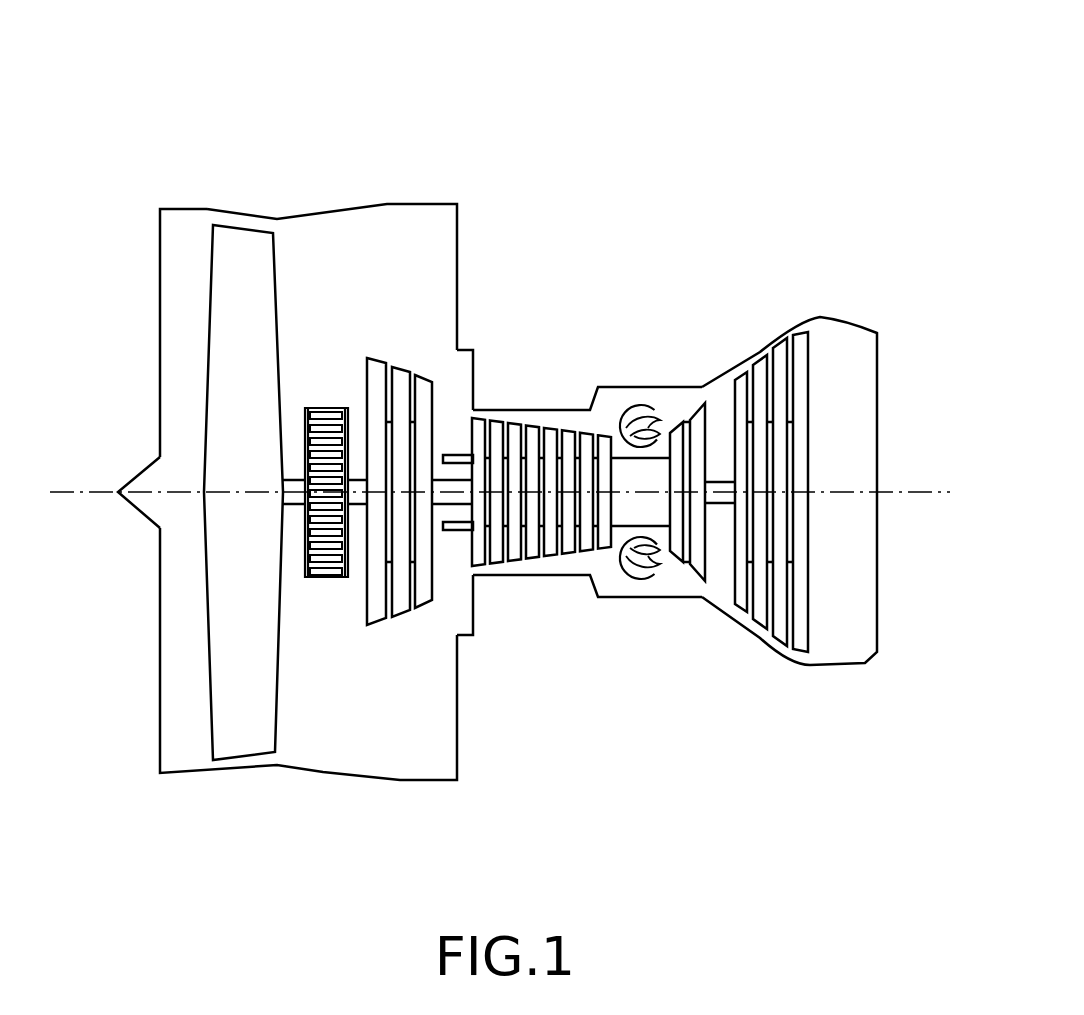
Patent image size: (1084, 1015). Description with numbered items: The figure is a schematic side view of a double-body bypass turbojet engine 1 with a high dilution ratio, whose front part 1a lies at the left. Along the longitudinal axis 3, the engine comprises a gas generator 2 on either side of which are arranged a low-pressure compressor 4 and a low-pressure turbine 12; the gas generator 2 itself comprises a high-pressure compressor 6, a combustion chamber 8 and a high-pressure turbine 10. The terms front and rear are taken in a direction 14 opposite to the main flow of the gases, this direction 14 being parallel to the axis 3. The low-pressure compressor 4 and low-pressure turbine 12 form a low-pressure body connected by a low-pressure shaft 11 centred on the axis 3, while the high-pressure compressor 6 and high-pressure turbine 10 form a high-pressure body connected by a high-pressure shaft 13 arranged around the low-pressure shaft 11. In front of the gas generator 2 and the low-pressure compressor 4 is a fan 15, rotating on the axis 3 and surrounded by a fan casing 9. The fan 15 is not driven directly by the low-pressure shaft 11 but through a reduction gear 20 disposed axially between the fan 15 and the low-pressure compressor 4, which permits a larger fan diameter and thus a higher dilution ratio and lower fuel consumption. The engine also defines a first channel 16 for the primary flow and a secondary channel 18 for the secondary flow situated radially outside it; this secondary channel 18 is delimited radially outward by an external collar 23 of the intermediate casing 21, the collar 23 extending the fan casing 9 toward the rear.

The turbojet engine 1 is at (354, 154).
The front part 1a is at (140, 273).
The gas generator 2 is at (535, 596).
The longitudinal axis 3 is at (918, 492).
The low-pressure compressor 4 is at (397, 642).
The high-pressure compressor 6 is at (545, 398).
The combustion chamber 8 is at (638, 591).
The fan casing 9 is at (207, 208).
The high-pressure turbine 10 is at (694, 590).
The low-pressure shaft 11 is at (443, 487).
The low-pressure turbine 12 is at (774, 651).
The high-pressure shaft 13 is at (638, 510).
The direction 14 is at (534, 105).
The fan 15 is at (228, 750).
The first channel 16 is at (438, 548).
The secondary channel 18 is at (340, 301).
The reduction gear 20 is at (328, 583).
The intermediate casing 21 is at (475, 760).
The external collar 23 is at (385, 207).